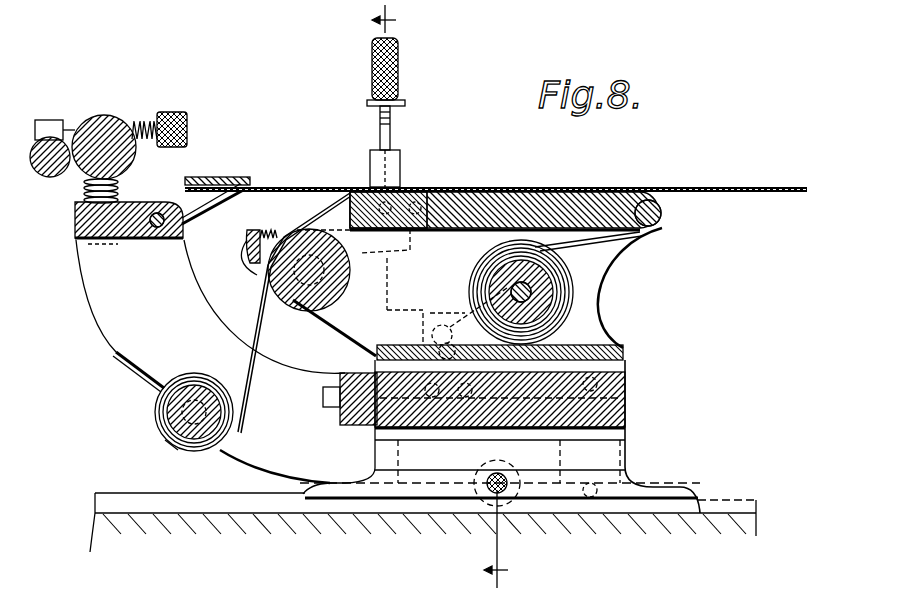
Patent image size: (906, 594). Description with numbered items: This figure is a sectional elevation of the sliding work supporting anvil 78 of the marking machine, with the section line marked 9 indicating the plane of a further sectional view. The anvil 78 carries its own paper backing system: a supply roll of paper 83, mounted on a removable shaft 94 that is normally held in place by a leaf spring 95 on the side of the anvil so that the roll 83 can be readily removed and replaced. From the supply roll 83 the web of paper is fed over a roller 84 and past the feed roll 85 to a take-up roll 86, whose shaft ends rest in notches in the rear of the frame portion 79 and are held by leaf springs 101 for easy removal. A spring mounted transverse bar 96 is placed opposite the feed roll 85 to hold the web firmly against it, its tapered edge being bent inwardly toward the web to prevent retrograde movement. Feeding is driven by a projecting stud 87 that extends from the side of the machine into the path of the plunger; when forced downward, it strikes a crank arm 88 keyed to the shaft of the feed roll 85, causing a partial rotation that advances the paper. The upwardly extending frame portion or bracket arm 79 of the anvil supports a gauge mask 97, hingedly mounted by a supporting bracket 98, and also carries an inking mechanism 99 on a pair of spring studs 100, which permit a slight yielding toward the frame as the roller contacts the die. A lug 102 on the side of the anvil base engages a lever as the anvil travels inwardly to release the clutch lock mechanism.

The section line 9- 9 is at (447, 296).
The work supporting anvil 78 is at (478, 216).
The frame portion or bracket arm 79 is at (110, 322).
The supply roll of paper 83 is at (562, 310).
The roller 84 is at (662, 220).
The feed roll 85 is at (304, 306).
The take-up roll 86 is at (202, 448).
The projecting stud 87 is at (372, 88).
The crank arm 88 is at (360, 270).
The shaft of the supply roll 94 is at (531, 290).
The leaf spring 95 is at (465, 315).
The spring mounted transverse bar 96 is at (247, 246).
The gauge mask 97 is at (716, 186).
The supporting bracket 98 is at (163, 205).
The inking mechanism 99 is at (107, 122).
The spring studs 100 is at (88, 245).
The leaf springs 101 is at (140, 378).
The lug 102 is at (423, 327).